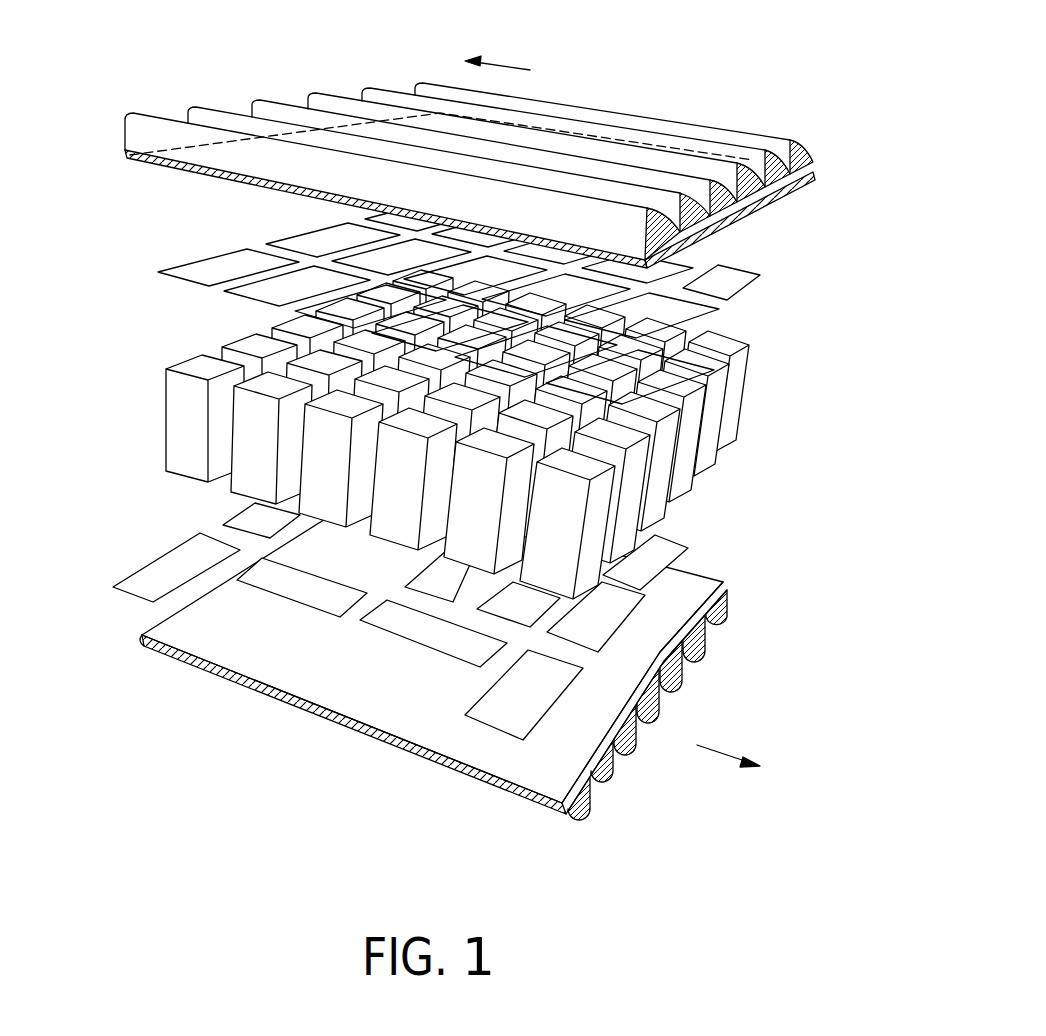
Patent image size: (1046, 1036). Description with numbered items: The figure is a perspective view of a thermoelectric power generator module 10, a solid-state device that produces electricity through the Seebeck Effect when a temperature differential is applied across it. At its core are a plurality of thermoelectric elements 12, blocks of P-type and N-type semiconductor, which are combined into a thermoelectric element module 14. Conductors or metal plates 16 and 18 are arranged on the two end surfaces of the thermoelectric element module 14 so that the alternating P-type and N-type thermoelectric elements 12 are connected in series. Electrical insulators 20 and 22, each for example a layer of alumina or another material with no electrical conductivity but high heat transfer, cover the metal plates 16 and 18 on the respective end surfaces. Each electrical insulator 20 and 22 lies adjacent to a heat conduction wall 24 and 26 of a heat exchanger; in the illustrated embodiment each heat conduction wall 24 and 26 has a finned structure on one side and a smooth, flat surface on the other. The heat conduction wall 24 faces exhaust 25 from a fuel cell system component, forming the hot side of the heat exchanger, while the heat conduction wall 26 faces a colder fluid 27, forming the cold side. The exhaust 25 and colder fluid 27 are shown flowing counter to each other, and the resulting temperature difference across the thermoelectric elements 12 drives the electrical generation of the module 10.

The thermoelectric power generator module 10 is at (498, 443).
The thermoelectric elements 12 is at (240, 465).
The thermoelectric element module 14 is at (479, 434).
The metal plate 16 is at (735, 286).
The metal plate 18 is at (567, 673).
The electrical insulator 20 is at (434, 167).
The electrical insulator 22 is at (387, 713).
The heat conduction wall 24 is at (695, 128).
The exhaust 25 is at (505, 62).
The heat conduction wall 26 is at (586, 823).
The colder fluid 27 is at (718, 753).